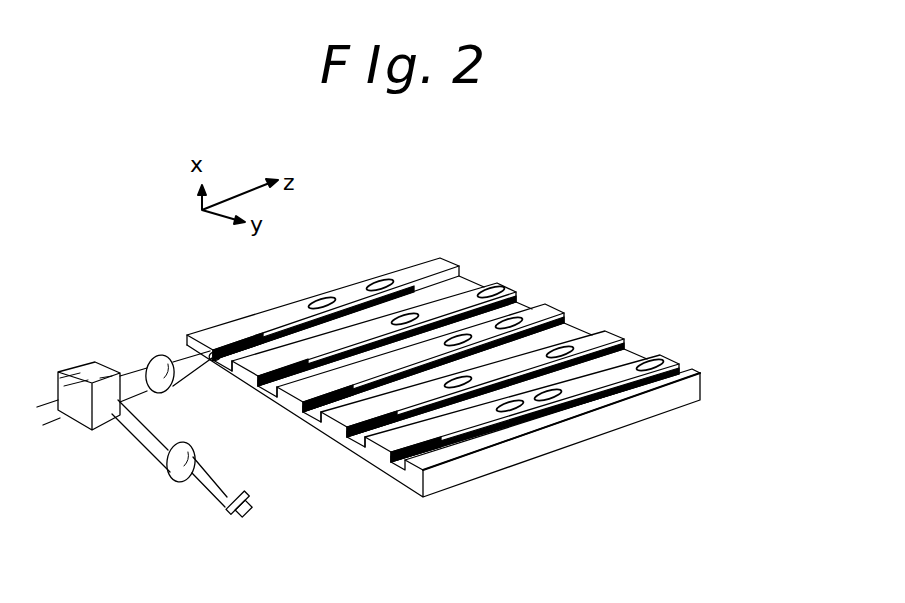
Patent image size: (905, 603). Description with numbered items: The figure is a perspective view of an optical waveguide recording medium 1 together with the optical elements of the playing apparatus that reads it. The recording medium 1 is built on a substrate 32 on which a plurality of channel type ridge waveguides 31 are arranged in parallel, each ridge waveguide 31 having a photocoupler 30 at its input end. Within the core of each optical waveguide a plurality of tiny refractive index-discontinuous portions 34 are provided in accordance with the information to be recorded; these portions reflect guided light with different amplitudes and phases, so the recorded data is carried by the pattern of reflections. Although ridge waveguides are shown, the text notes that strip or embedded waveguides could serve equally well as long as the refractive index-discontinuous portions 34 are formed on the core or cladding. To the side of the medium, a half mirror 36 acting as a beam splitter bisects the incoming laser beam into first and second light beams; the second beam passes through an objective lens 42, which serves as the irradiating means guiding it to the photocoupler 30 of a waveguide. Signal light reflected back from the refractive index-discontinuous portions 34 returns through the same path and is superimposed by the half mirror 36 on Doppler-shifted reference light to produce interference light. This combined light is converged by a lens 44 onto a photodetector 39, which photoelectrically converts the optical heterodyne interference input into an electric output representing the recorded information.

The optical waveguide recording medium 1 is at (466, 204).
The photocoupler 30 is at (264, 377).
The channel type ridge waveguide 31 is at (554, 303).
The substrate 32 is at (512, 472).
The refractive index-discontinuous portion 34 is at (322, 301).
The half mirror (beam splitter) 36 is at (95, 432).
The photodetector 39 is at (250, 514).
The objective lens 42 is at (156, 358).
The lens 44 is at (180, 482).